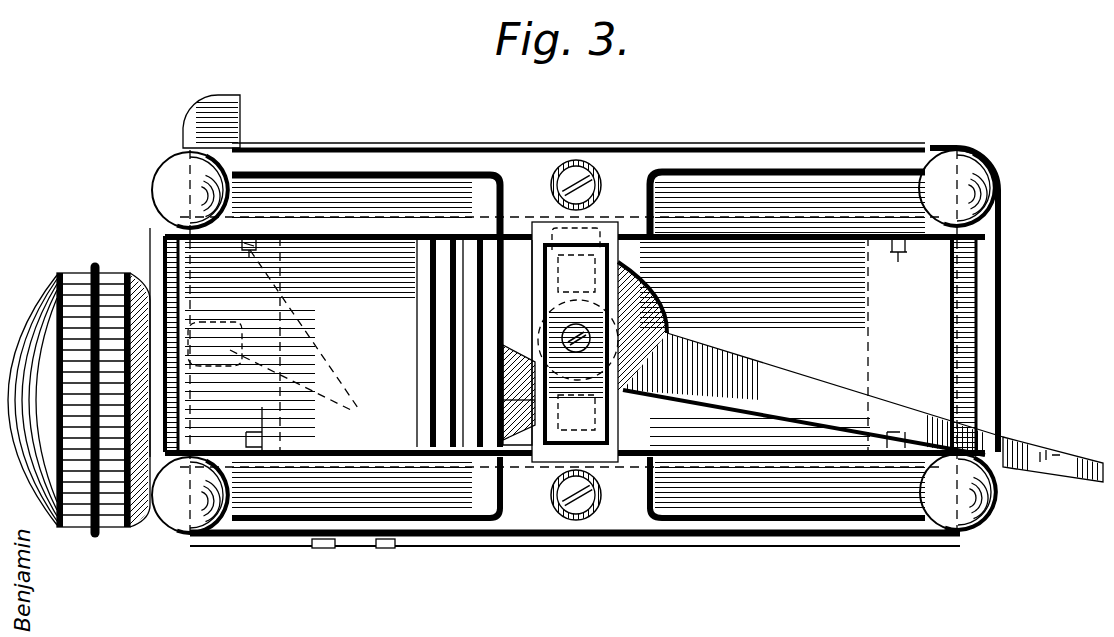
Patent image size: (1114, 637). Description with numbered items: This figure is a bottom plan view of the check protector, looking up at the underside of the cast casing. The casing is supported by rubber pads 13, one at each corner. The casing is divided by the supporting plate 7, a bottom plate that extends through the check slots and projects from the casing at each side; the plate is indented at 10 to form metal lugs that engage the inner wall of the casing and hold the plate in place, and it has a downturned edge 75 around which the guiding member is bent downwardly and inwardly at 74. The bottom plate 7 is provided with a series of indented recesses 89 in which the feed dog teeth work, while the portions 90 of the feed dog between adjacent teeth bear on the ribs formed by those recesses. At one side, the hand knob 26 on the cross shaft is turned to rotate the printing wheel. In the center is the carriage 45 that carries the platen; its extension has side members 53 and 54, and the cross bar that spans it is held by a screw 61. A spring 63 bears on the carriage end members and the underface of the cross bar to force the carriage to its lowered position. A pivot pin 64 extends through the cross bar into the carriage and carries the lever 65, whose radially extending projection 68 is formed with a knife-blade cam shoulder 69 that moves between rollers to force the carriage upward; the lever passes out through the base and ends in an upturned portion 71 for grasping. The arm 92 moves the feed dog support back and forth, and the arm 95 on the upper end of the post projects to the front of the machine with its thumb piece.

The supporting plate 7 is at (703, 425).
The indentations forming metal lugs 10 is at (250, 238).
The rubber pads 13 is at (166, 183).
The hand knob 26 is at (116, 520).
The carriage 45 is at (542, 282).
The side member 53 is at (548, 310).
The side member 54 is at (610, 375).
The screw 61 is at (572, 162).
The spring 63 is at (612, 420).
The pivot pin 64 is at (610, 342).
The lever 65 is at (813, 394).
The radially extending projection 68 is at (533, 403).
The cam shoulder 69 is at (535, 365).
The upturned portion 71 is at (1062, 468).
The downwardly and inwardly bent portion 74 is at (387, 548).
The downturned edge 75 is at (250, 547).
The indented recesses 89 is at (450, 312).
The portions of the feed dog between adjacent teeth 90 is at (460, 338).
The arm 92 is at (300, 352).
The arm 95 is at (211, 106).